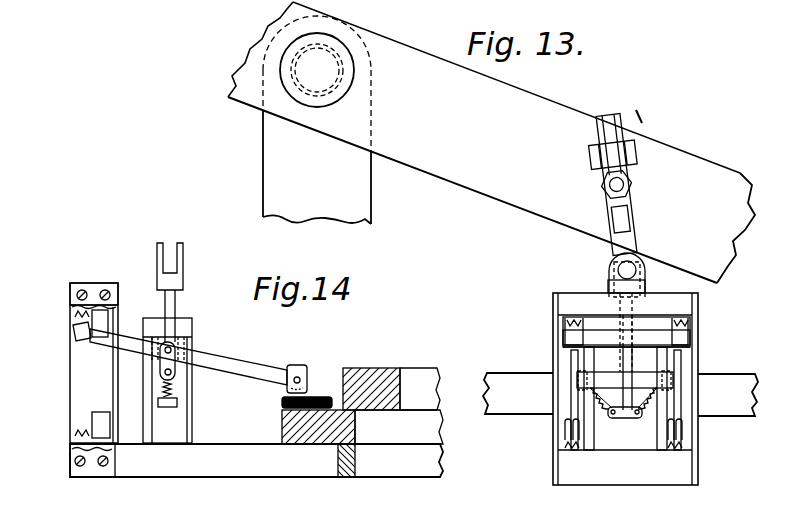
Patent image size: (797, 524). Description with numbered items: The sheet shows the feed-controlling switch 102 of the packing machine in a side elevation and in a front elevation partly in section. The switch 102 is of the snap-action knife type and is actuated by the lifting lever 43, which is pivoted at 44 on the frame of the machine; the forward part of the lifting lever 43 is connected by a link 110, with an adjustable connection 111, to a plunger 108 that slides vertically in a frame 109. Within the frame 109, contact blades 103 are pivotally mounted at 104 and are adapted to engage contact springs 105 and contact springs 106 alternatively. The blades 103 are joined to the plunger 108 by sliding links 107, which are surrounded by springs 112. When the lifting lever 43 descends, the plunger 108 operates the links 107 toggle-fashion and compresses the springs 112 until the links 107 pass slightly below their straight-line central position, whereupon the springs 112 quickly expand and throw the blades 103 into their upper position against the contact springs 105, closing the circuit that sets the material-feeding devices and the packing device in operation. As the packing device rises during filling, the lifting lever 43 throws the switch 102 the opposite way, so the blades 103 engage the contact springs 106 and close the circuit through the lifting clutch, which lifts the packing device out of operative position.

In FIG. 13, the lifting lever 43 is at (491, 142).
In FIG. 13, the pivot 44 is at (327, 68).
In FIG. 13, the switch 102 is at (620, 427).
In FIG. 13, the contact blades 103 is at (568, 348).
In FIG. 14, the contact blades 103 is at (247, 367).
In FIG. 14, the blade pivot 104 is at (302, 370).
In FIG. 13, the contact springs 105 is at (570, 327).
In FIG. 14, the contact springs 105 is at (101, 300).
In FIG. 13, the contact springs 106 is at (565, 432).
In FIG. 14, the contact springs 106 is at (100, 422).
In FIG. 13, the sliding links 107 is at (598, 403).
In FIG. 13, the plunger 108 is at (630, 362).
In FIG. 14, the plunger 108 is at (173, 302).
In FIG. 13, the frame 109 is at (572, 305).
In FIG. 14, the frame 109 is at (165, 327).
In FIG. 13, the link 110 is at (612, 246).
In FIG. 13, the adjustable connection 111 is at (617, 158).
In FIG. 13, the springs 112 is at (607, 414).